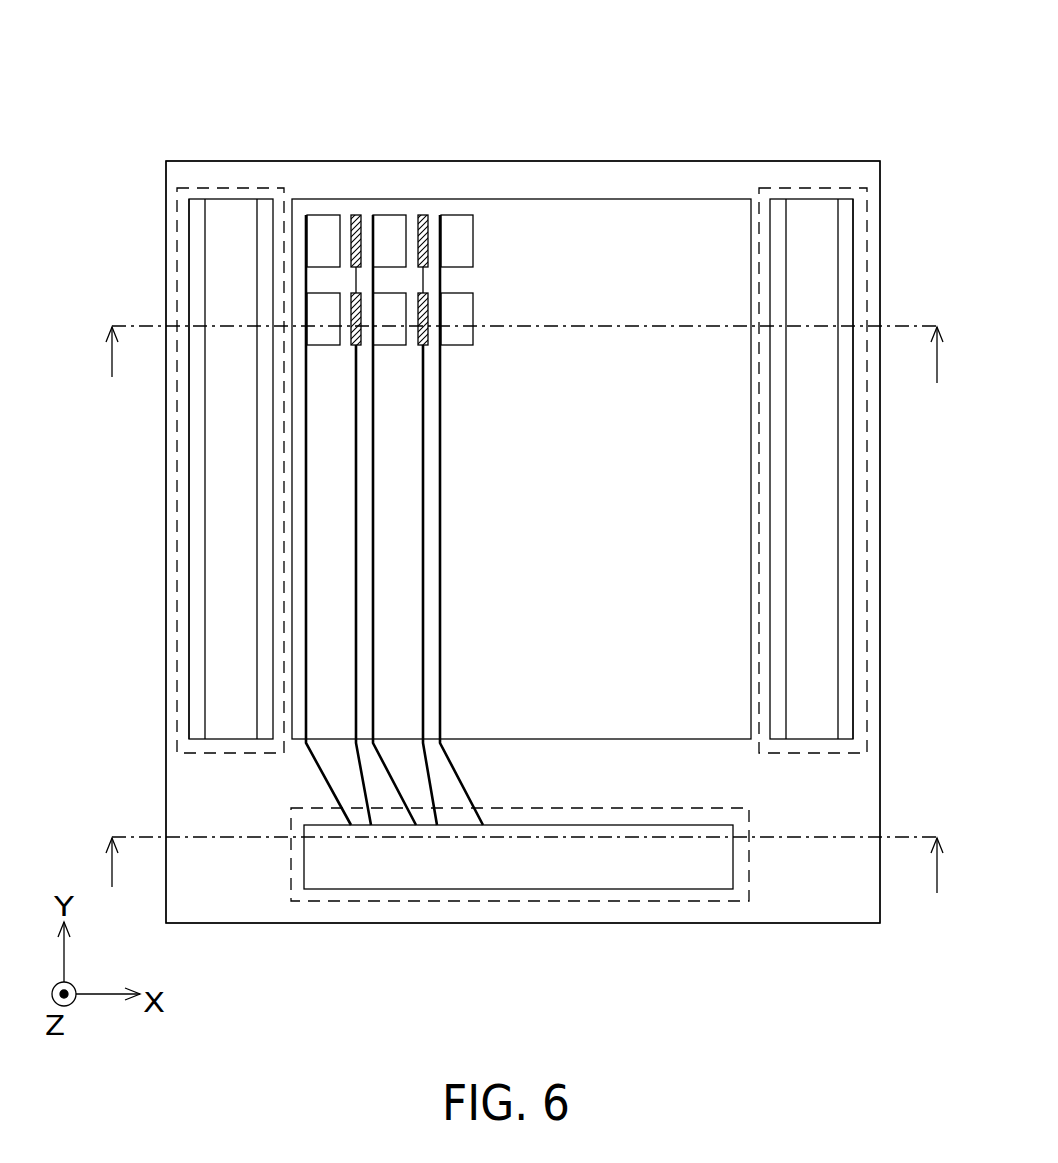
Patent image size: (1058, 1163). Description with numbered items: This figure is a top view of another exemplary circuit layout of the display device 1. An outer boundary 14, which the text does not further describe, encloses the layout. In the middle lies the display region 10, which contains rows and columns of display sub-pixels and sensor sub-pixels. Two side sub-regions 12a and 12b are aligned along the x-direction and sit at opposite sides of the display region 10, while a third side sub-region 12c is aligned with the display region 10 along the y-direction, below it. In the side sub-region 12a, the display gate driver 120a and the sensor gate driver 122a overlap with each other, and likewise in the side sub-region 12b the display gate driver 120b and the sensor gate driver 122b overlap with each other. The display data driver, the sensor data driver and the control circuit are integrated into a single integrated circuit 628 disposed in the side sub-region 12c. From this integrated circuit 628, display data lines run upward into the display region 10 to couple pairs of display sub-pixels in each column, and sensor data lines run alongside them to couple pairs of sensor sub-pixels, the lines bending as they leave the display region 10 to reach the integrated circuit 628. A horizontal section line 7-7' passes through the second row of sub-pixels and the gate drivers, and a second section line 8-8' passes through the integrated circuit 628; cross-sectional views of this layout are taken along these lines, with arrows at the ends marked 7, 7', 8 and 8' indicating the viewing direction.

The display device 1 is at (691, 73).
The substrate 14 is at (815, 161).
The display region 10 is at (622, 741).
The side sub-region 12a is at (218, 755).
The side sub-region 12b is at (825, 755).
The side sub-region 12c is at (750, 871).
The display gate driver 120a is at (207, 501).
The display gate driver 120b is at (838, 501).
The sensor gate driver 122a is at (190, 446).
The sensor gate driver 122b is at (853, 446).
The integrated circuit 628 is at (541, 876).
The section line 7-7' 7 is at (521, 366).
The section line 7- 7' is at (940, 367).
The section line 8-8' 8 is at (521, 879).
The section line 8- 8' is at (940, 879).